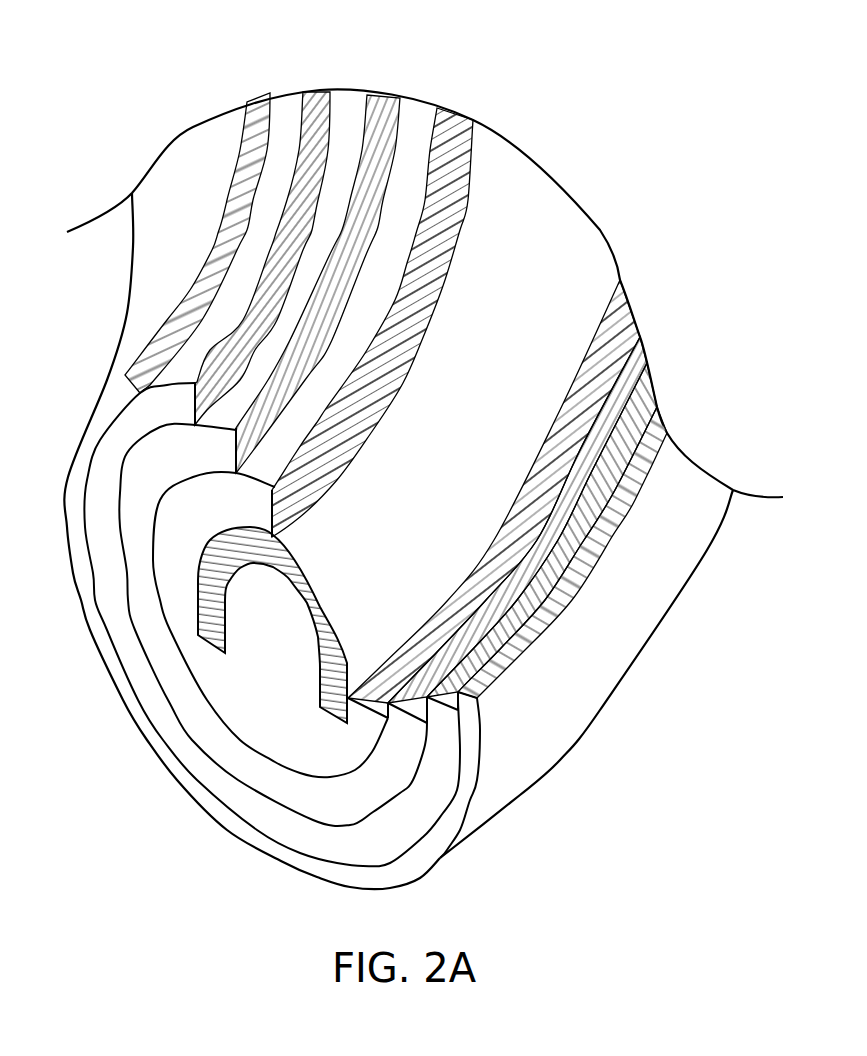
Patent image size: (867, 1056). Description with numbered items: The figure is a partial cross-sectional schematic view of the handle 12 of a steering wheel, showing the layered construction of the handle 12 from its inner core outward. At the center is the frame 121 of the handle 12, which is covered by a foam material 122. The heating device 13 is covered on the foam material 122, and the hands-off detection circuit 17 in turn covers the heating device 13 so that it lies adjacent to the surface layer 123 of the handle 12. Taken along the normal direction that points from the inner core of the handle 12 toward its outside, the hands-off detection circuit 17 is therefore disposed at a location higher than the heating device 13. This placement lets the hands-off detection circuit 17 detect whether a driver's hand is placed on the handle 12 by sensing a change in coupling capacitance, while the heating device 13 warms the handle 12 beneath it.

The handle 12 is at (112, 296).
The frame 121 is at (203, 615).
The foam material 122 is at (240, 703).
The surface layer 123 is at (587, 690).
The heating device 13 is at (360, 803).
The hands-off detection circuit 17 is at (438, 780).